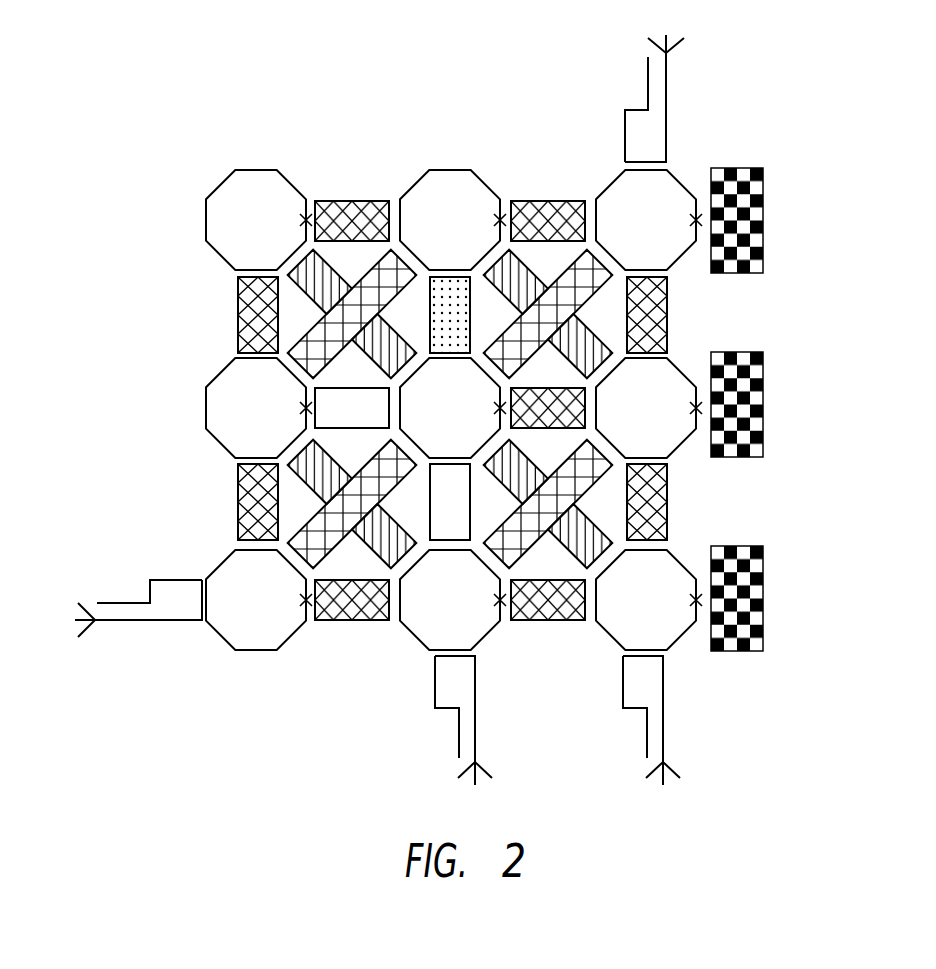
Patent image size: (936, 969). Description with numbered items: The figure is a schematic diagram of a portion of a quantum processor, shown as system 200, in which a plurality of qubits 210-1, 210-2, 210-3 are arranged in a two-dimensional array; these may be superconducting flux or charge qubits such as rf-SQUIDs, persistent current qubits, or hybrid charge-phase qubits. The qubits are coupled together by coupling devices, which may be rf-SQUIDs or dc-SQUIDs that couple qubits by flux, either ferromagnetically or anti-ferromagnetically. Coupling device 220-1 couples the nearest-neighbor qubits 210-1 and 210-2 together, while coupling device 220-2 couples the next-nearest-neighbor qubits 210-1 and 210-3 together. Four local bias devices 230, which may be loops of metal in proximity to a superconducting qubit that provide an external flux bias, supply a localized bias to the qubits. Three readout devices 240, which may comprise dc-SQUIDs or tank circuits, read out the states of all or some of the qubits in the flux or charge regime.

The system 200 is at (850, 158).
The qubit 210-1 is at (216, 186).
The qubit 210-2 is at (490, 185).
The qubit 210-3 is at (207, 412).
The coupling device 220-1 is at (340, 200).
The coupling device 220-2 is at (382, 250).
The local bias device 230 is at (153, 622).
The readout device 240 is at (764, 203).